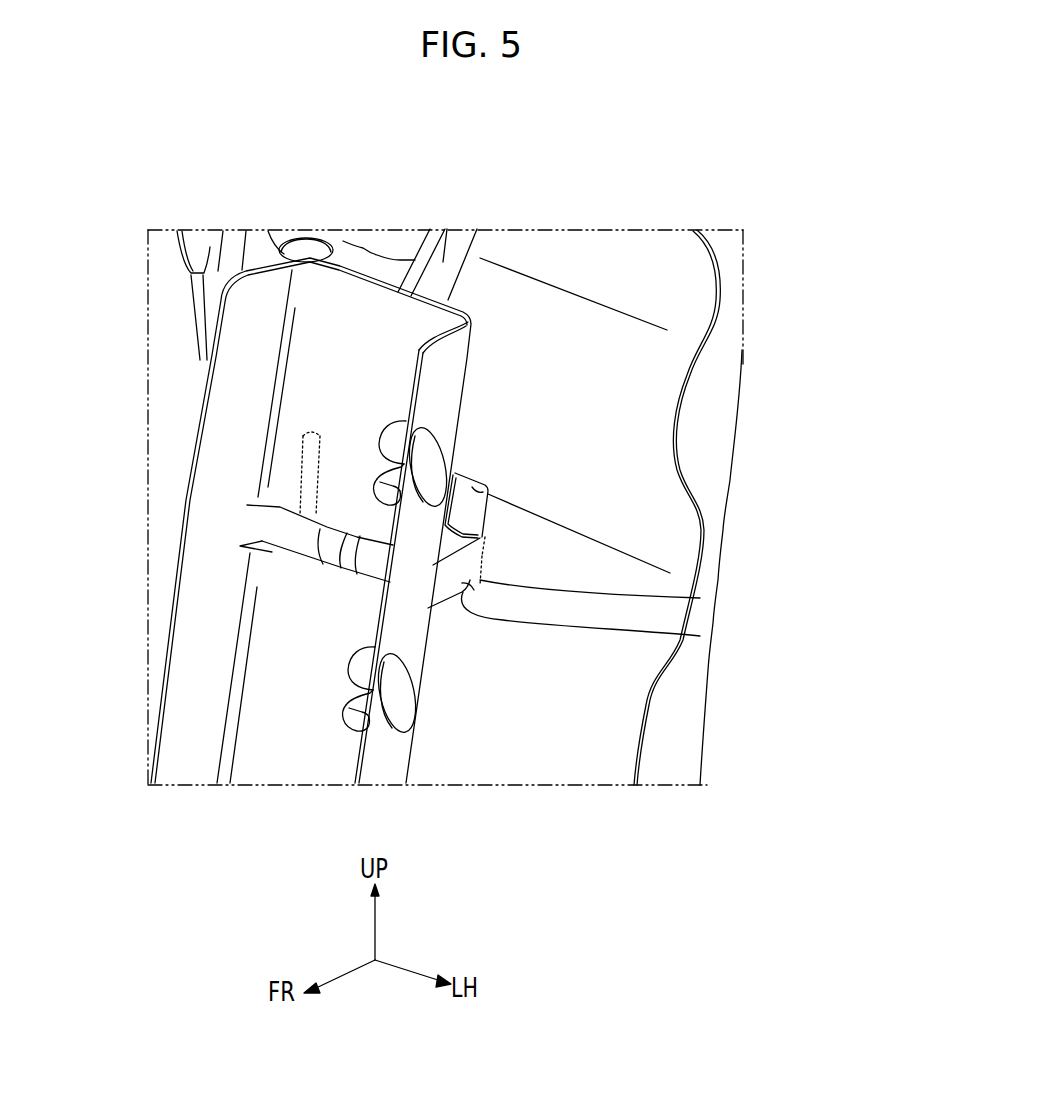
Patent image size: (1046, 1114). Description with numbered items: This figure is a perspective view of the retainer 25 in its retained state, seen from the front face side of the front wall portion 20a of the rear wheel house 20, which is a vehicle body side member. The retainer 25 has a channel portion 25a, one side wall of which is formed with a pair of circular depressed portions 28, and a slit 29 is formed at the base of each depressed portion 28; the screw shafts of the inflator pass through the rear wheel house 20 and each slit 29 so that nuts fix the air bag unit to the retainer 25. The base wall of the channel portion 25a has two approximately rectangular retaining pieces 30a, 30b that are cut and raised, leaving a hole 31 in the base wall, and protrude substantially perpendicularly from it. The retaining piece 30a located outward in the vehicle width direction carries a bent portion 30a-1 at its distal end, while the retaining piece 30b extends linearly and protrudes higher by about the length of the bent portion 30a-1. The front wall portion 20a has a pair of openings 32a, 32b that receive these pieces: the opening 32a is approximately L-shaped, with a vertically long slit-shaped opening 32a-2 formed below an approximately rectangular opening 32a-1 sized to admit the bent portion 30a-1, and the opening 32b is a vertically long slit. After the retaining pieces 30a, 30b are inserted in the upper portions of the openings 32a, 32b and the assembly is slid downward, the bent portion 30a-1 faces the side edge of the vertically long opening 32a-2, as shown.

The rear wheel house 20 is at (627, 256).
The front wall portion 20a is at (690, 273).
The retainer 25 is at (470, 364).
The channel portion 25a is at (343, 272).
The depressed portion 28 is at (405, 465).
The slit 29 is at (487, 498).
The retaining piece 30a is at (670, 573).
The bent portion 30a-1 is at (483, 535).
The retaining piece 30b is at (280, 523).
The hole 31 is at (260, 545).
The opening 32a is at (687, 503).
The rectangular opening 32a-1 is at (490, 498).
The vertically long opening 32a-2 is at (700, 636).
The opening 32b is at (305, 456).